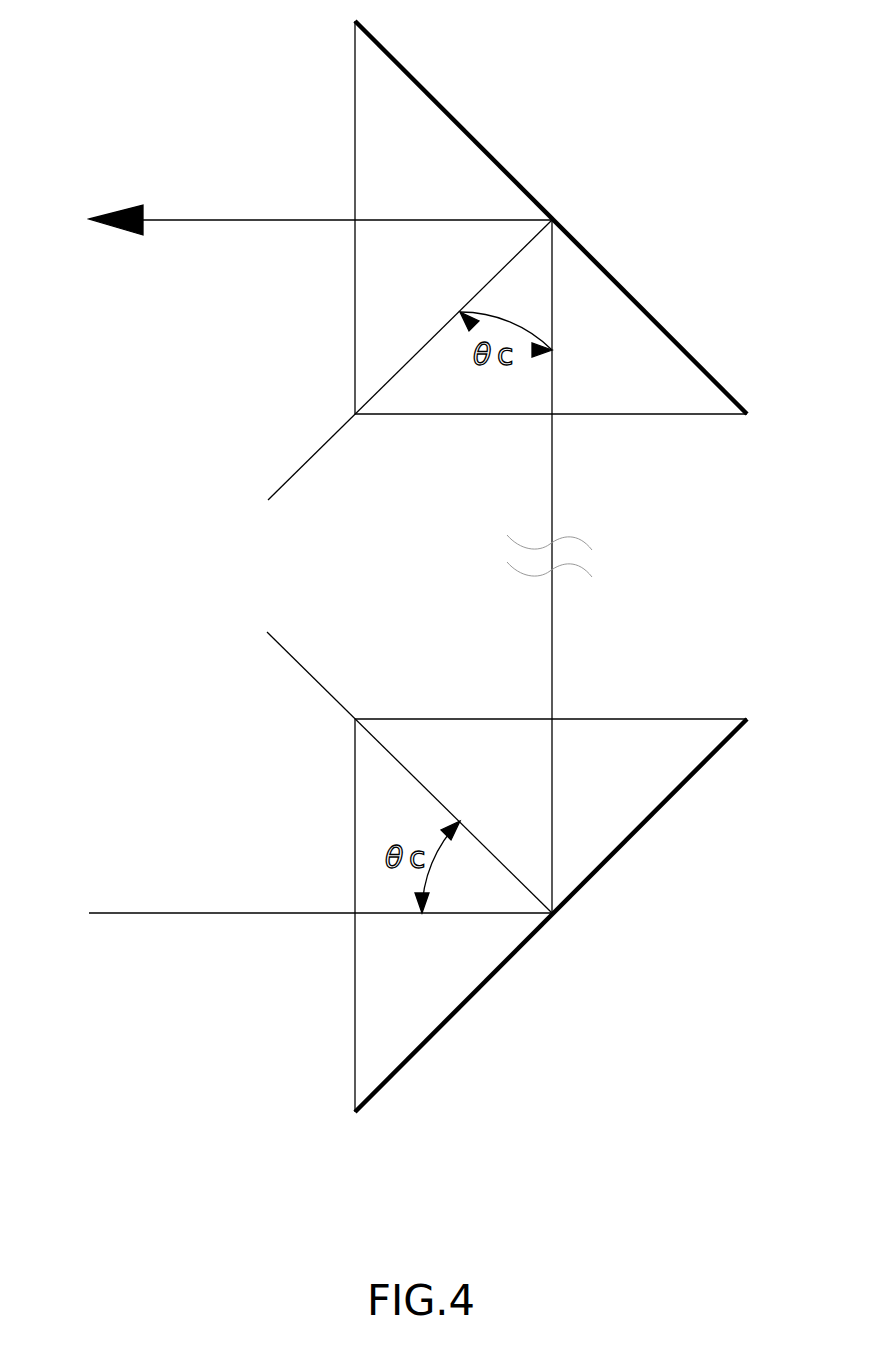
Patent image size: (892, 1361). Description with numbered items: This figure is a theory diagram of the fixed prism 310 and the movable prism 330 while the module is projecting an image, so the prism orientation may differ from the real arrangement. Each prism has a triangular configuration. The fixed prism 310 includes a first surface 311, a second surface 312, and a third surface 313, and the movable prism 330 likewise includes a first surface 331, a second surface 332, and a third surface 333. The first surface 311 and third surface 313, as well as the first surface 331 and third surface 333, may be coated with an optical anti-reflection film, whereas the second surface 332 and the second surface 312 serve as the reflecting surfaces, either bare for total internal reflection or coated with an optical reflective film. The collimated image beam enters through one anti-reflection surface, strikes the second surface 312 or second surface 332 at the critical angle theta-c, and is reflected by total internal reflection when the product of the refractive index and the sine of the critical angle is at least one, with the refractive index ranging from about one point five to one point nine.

The fixed prism 310 is at (510, 246).
The first surface 311 is at (355, 172).
The second surface 312 is at (517, 183).
The third surface 313 is at (598, 414).
The movable prism 330 is at (511, 888).
The first surface 331 is at (355, 962).
The second surface 332 is at (517, 952).
The third surface 333 is at (600, 719).